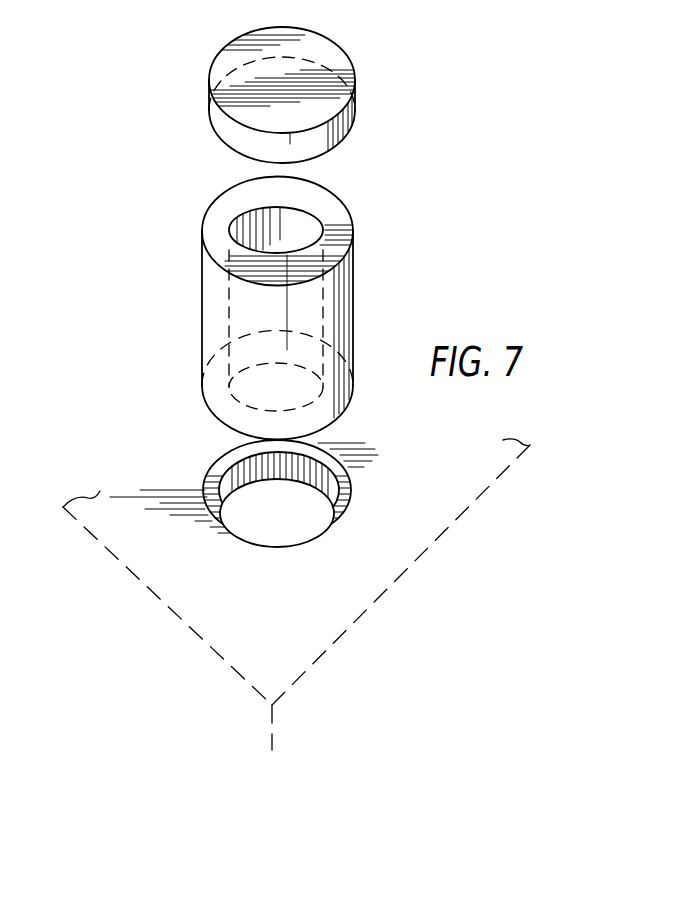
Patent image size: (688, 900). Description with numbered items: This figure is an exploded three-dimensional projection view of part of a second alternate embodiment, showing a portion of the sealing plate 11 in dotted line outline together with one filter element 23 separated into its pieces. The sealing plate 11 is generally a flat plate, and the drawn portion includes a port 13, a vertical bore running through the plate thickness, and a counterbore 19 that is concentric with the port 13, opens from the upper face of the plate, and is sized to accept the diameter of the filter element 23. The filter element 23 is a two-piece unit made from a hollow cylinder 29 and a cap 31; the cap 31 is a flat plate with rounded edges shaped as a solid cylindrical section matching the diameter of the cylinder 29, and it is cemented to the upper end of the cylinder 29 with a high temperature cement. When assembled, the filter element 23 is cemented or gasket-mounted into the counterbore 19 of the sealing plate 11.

The sealing plate 11 is at (416, 597).
The port 13 is at (352, 494).
The counterbore 19 is at (243, 446).
The filter element 23 is at (364, 134).
The hollow cylinder 29 is at (202, 298).
The cap 31 is at (208, 93).